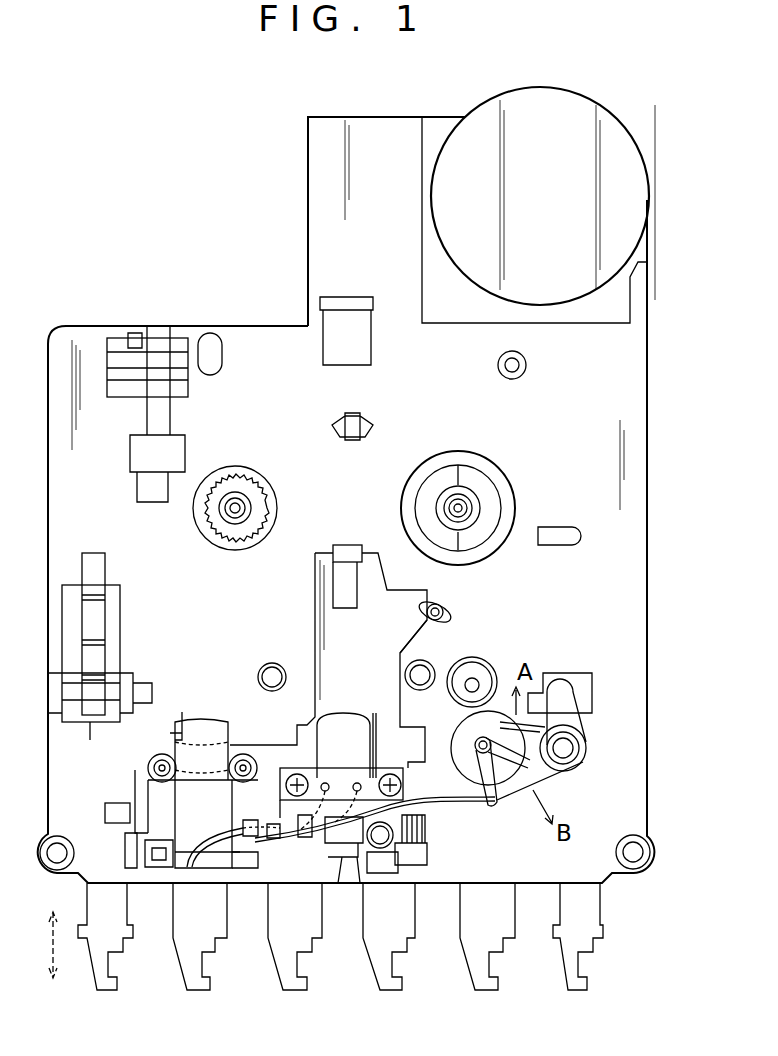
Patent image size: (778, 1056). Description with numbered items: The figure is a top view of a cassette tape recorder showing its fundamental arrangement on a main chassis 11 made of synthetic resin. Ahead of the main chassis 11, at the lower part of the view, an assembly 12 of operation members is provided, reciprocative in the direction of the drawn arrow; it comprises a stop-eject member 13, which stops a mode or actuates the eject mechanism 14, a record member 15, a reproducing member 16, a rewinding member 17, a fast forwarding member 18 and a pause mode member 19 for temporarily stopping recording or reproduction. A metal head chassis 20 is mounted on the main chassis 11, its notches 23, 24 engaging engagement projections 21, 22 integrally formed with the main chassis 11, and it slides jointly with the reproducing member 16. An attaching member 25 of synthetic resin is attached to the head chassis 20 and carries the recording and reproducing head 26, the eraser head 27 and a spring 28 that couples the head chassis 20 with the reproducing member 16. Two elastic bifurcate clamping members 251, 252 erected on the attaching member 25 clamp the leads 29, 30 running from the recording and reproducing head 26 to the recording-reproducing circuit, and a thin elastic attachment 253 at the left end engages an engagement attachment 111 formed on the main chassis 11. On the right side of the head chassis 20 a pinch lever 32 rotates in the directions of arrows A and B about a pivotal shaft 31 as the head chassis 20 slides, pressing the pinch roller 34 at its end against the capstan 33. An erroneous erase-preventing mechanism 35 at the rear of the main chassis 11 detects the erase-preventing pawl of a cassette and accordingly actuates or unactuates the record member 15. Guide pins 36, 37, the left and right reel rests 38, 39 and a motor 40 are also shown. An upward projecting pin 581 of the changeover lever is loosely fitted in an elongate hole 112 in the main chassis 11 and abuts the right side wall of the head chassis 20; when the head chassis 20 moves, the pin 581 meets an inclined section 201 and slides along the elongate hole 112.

The main chassis 11 is at (650, 368).
The assembly of operation members 12 is at (348, 978).
The stop-eject member 13 is at (107, 985).
The eject mechanism 14 is at (122, 650).
The record member 15 is at (190, 985).
The reproducing member 16 is at (383, 985).
The rewinding member 17 is at (284, 985).
The fast forwarding member 18 is at (475, 985).
The pause mode member 19 is at (583, 985).
The head chassis 20 is at (315, 603).
The engagement projection 21 is at (350, 545).
The engagement projection 22 is at (343, 860).
The notch 23 is at (355, 600).
The notch 24 is at (362, 882).
The attaching member 25 is at (243, 866).
The recording and reproducing head 26 is at (350, 713).
The eraser head 27 is at (212, 718).
The spring 28 is at (427, 828).
The lead 29 is at (200, 852).
The lead 30 is at (215, 855).
The pivotal shaft 31 is at (586, 750).
The pinch lever 32 is at (560, 775).
The capstan 33 is at (476, 678).
The pinch roller 34 is at (458, 728).
The erroneous erase-preventing mechanism 35 is at (193, 386).
The guide pin 36 is at (275, 663).
The guide pin 37 is at (430, 665).
The left reel rest 38 is at (247, 492).
The right reel rest 39 is at (470, 500).
The motor 40 is at (605, 283).
The engagement attachment 111 is at (115, 803).
The elongate hole 112 is at (452, 612).
The inclined section 201 is at (405, 647).
The elastic bifurcate clamping member 251 is at (265, 855).
The elastic bifurcate clamping member 252 is at (245, 820).
The elastic attachment 253 is at (125, 856).
The upward projecting pin 581 is at (447, 601).